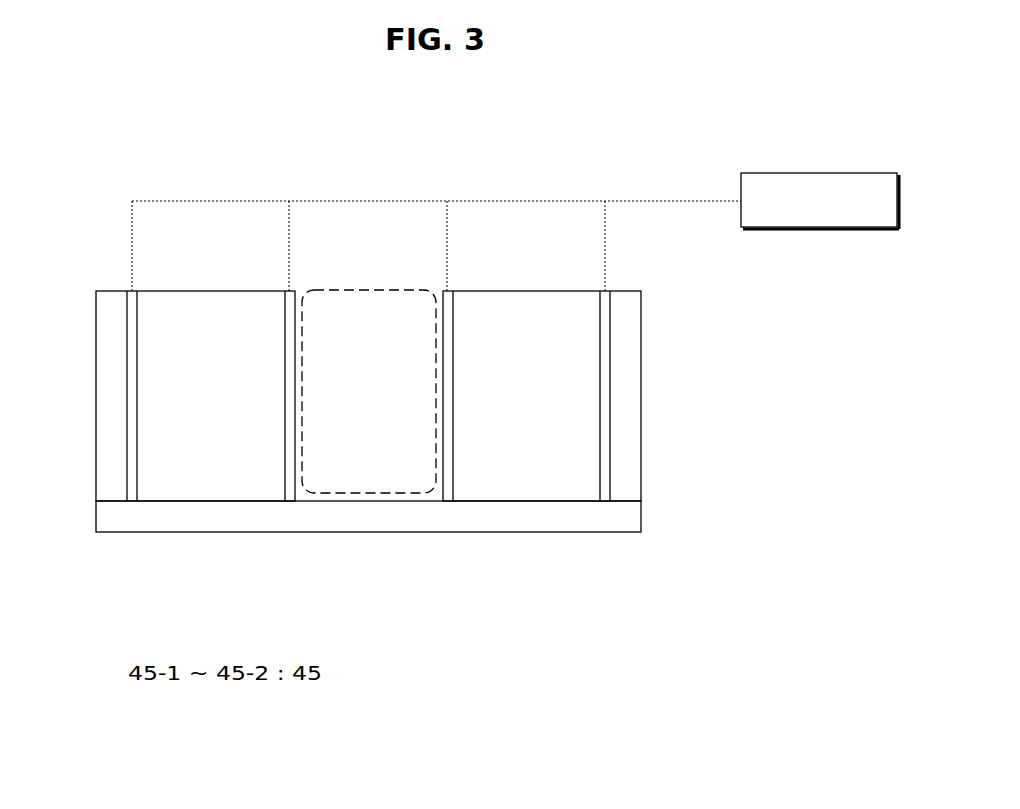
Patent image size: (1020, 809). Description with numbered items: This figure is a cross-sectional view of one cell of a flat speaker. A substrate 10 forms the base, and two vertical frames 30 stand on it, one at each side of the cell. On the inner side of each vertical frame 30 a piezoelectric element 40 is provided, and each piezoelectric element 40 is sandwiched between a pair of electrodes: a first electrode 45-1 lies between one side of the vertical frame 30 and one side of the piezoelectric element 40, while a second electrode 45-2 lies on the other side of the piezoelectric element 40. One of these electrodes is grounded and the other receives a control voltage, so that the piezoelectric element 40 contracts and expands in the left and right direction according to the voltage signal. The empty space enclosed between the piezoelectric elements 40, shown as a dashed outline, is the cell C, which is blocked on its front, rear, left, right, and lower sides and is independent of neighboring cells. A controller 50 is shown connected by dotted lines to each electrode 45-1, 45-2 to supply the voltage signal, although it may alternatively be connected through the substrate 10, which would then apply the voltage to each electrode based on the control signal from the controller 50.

The substrate 10 is at (517, 533).
The vertical frame 30 is at (106, 388).
The piezoelectric element 40 is at (158, 459).
The first electrode 45-1 is at (128, 306).
The second electrode 45-2 is at (284, 308).
The controller 50 is at (817, 172).
The cell C is at (374, 290).